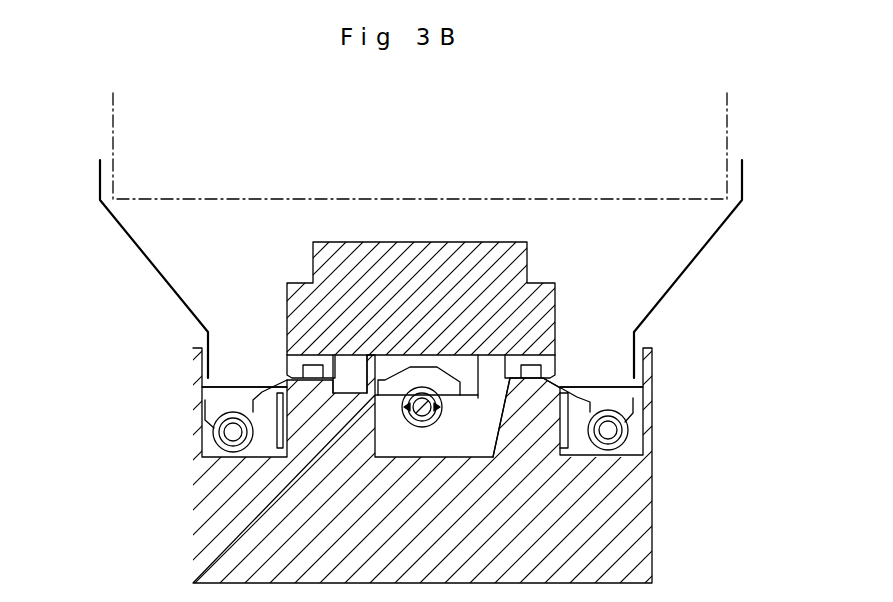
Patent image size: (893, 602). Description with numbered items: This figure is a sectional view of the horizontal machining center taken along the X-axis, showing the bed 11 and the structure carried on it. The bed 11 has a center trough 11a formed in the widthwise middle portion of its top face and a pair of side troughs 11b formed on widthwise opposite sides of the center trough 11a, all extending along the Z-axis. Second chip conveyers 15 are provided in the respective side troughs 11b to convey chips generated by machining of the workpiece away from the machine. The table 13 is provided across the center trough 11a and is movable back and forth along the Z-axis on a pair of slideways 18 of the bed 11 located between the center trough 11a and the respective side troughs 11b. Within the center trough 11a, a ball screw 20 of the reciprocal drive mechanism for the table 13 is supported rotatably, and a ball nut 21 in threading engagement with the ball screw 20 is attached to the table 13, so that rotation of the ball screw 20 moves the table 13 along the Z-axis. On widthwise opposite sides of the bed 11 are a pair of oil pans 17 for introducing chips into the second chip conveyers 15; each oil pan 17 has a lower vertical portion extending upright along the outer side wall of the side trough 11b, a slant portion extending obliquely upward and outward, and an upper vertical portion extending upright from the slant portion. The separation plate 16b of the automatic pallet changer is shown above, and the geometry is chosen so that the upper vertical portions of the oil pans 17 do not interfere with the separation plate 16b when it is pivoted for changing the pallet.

The bed 11 is at (208, 524).
The center trough 11a is at (488, 415).
The side troughs 11b is at (208, 445).
The table 13 is at (518, 262).
The second chip conveyers 15 is at (210, 420).
The separation plate 16b is at (237, 201).
The oil pans 17 is at (122, 227).
The slideways 18 is at (290, 351).
The ball screw 20 is at (428, 414).
The ball nut 21 is at (410, 417).